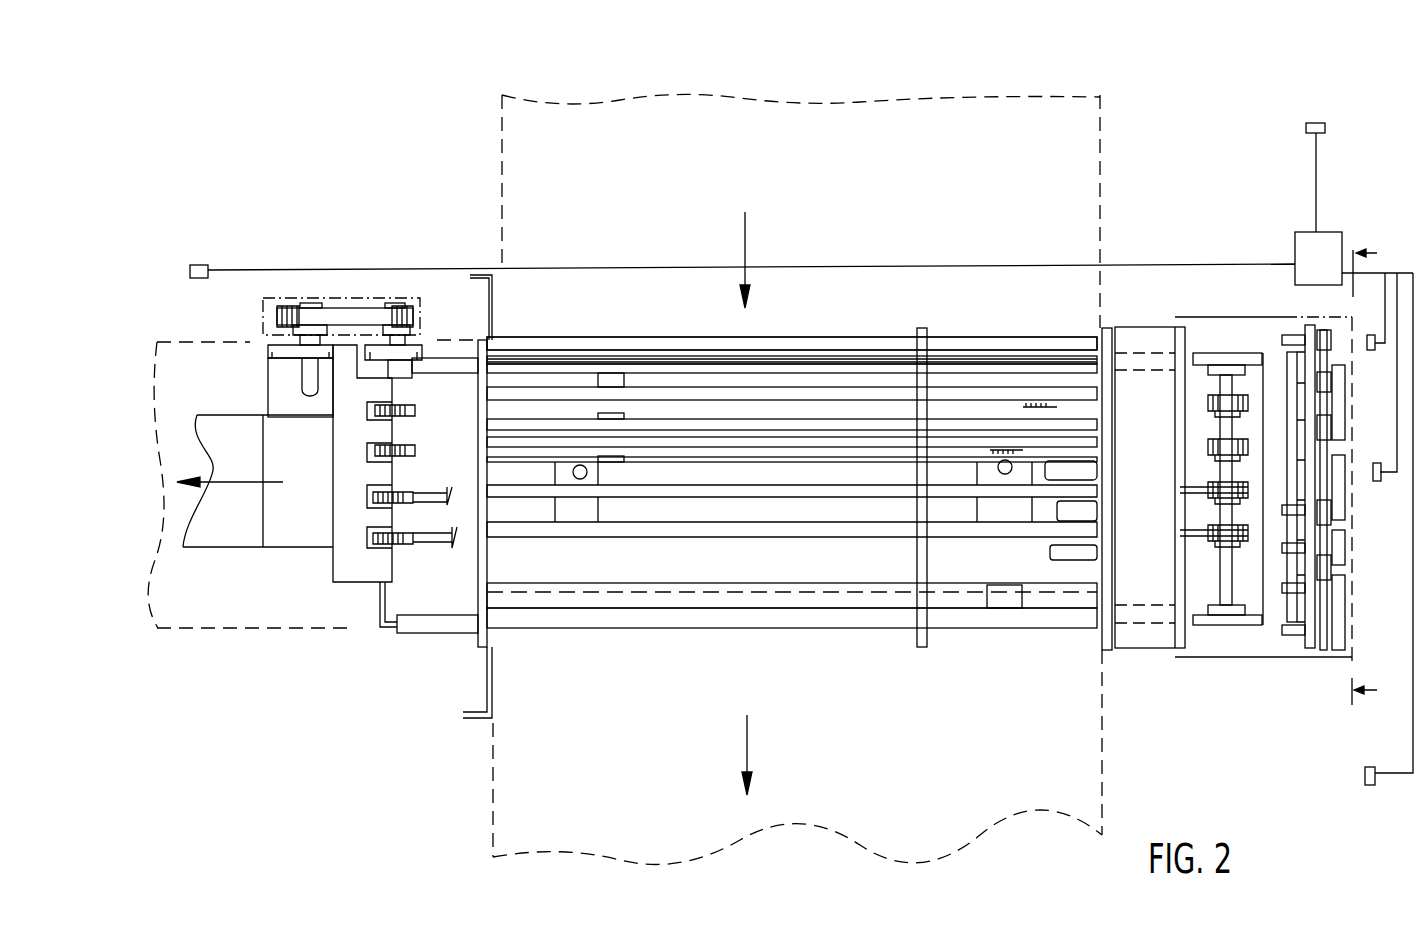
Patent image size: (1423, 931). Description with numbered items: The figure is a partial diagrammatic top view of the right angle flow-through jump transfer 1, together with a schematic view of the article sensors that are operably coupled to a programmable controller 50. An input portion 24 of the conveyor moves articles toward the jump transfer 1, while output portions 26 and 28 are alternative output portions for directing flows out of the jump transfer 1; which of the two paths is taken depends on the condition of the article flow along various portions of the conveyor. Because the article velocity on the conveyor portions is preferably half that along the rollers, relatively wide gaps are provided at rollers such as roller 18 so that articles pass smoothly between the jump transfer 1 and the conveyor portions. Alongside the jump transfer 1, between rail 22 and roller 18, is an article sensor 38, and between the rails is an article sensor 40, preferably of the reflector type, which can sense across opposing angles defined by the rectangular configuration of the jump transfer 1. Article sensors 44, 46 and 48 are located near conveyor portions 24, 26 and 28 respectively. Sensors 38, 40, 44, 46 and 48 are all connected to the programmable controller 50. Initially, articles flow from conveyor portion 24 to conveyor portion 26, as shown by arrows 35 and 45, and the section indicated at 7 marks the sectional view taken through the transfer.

The flow-through jump transfer 1 is at (525, 645).
The section line 7- 7 is at (1373, 473).
The roller 18 is at (970, 340).
The rail 22 is at (1030, 357).
The input portion 24 is at (1027, 186).
The output portion 26 is at (249, 613).
The output portion 28 is at (1022, 776).
The arrow 35 is at (203, 481).
The article sensor 38 is at (1370, 351).
The article sensor 40 is at (1376, 482).
The article sensor 44 is at (1325, 121).
The arrow 45 is at (743, 240).
The article sensor 46 is at (214, 260).
The article sensor 48 is at (1368, 786).
The programmable controller 50 is at (1330, 236).